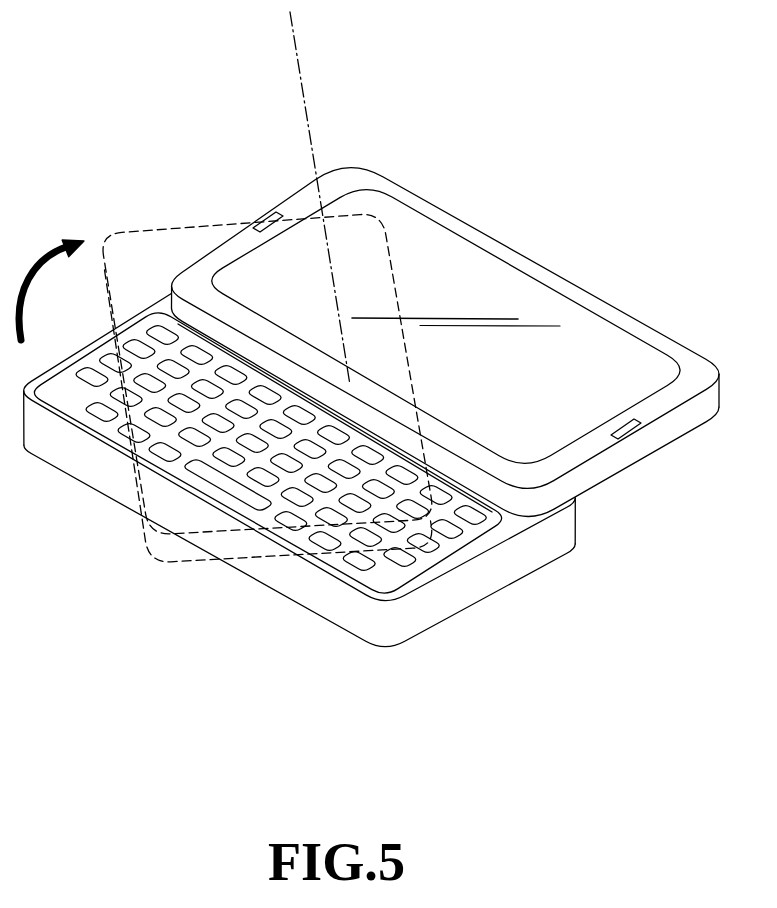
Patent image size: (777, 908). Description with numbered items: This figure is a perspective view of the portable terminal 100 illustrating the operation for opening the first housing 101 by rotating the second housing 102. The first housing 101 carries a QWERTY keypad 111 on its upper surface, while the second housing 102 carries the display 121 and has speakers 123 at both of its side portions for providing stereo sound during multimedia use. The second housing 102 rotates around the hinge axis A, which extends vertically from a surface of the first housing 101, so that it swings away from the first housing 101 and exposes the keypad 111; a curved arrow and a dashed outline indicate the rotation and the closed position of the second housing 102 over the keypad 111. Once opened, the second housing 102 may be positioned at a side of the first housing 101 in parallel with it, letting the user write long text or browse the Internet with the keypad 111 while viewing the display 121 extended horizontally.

The portable terminal 100 is at (131, 60).
The first housing 101 is at (285, 621).
The second housing 102 is at (542, 243).
The QWERTY keypad 111 is at (453, 530).
The display 121 is at (421, 240).
The speakers 123 is at (262, 224).
The hinge axis A is at (299, 77).